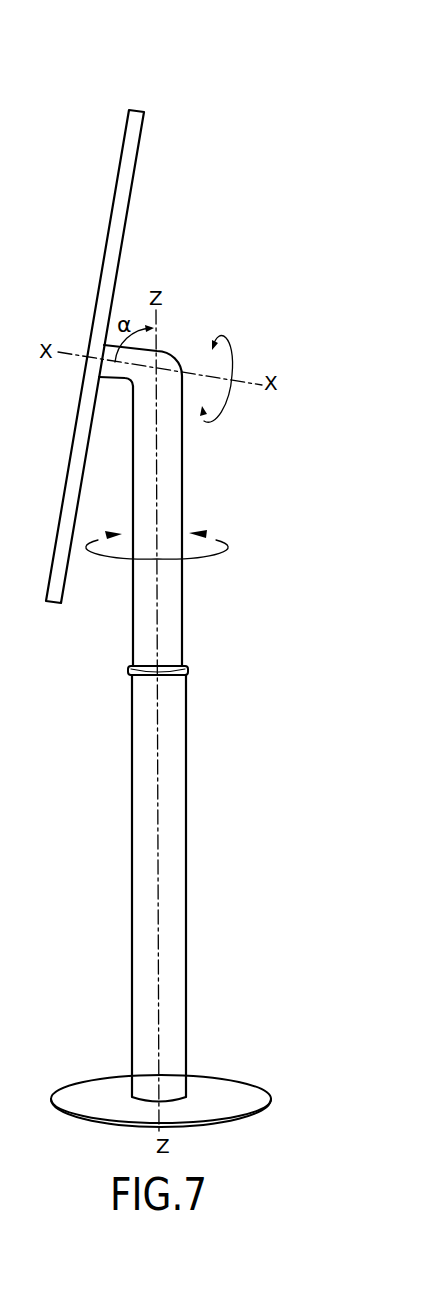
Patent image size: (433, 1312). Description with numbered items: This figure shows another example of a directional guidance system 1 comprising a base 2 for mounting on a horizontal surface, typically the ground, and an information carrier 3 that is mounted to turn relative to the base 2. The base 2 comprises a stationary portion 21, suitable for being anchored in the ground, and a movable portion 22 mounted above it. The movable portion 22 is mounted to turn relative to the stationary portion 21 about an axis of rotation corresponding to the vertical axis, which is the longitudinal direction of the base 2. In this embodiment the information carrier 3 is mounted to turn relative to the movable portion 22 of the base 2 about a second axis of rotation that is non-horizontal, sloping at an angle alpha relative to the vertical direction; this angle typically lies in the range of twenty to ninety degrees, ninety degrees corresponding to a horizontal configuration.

The directional guidance system 1 is at (207, 65).
The base 2 is at (63, 846).
The information carrier 3 is at (122, 130).
The stationary portion 21 is at (186, 805).
The movable portion 22 is at (185, 617).